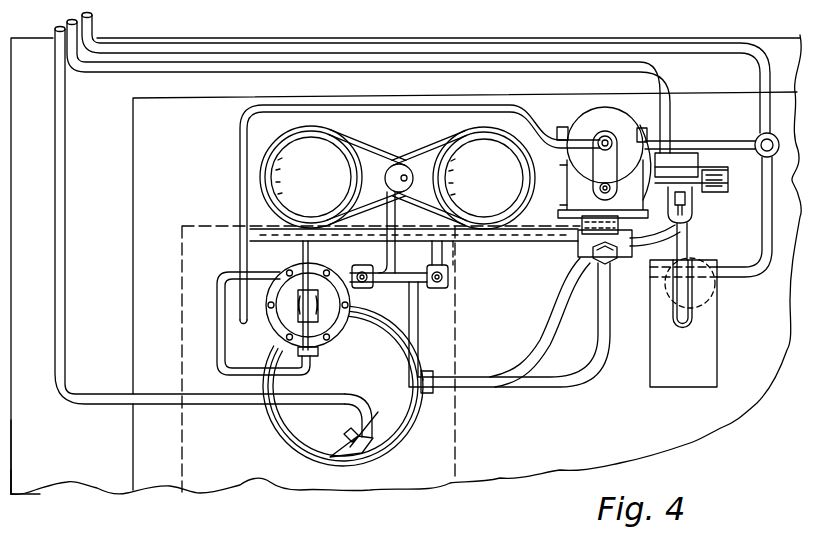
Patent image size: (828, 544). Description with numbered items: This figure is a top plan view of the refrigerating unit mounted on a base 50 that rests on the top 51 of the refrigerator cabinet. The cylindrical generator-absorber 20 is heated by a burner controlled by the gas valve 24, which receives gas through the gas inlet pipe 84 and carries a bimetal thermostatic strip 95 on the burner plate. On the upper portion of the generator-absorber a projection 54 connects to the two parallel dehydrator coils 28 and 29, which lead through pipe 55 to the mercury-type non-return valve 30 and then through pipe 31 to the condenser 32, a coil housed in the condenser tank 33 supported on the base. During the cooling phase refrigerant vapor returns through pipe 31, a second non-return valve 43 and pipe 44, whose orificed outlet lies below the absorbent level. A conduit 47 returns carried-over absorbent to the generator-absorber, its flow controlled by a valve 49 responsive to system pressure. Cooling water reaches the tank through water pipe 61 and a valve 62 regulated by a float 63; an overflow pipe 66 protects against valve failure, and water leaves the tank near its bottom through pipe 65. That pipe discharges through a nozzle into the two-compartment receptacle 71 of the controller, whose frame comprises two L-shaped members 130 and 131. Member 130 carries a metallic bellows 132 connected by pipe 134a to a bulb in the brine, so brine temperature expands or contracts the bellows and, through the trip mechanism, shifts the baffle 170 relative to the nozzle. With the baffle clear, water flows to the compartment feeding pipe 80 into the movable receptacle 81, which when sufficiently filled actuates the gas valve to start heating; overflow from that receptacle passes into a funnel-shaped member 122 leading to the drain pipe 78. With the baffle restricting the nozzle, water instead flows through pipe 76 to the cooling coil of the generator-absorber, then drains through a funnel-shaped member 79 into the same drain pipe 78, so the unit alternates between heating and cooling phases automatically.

The generator-absorber 20 is at (522, 235).
The gas valve 24 is at (686, 161).
The dehydrator coil 28 is at (482, 141).
The dehydrator coil 29 is at (302, 143).
The non-return valve 30 is at (448, 287).
The pipe 31 is at (418, 321).
The condenser 32 is at (397, 340).
The condenser tank 33 is at (422, 410).
The non-return valve 43 is at (370, 286).
The pipe 44 is at (396, 205).
The conduit 47 is at (218, 323).
The valve 49 is at (273, 333).
The base 50 is at (133, 440).
The top 51 is at (47, 478).
The projection 54 is at (399, 165).
The pipe 55 is at (453, 255).
The water pipe 61 is at (63, 105).
The valve 62 is at (338, 454).
The float 63 is at (380, 413).
The pipe 65 is at (593, 363).
The overflow pipe 66 is at (549, 319).
The receptacle 71 is at (580, 254).
The pipe 76 is at (688, 226).
The drain pipe 78 is at (512, 45).
The funnel-shaped member 79 is at (775, 136).
The pipe 80 is at (674, 250).
The movable receptacle 81 is at (650, 330).
The gas inlet pipe 84 is at (410, 66).
The bimetal thermostatic strip 95 is at (698, 177).
The funnel-shaped member 122 is at (715, 300).
The L-shaped member 130 is at (573, 179).
The L-shaped member 131 is at (562, 127).
The metallic bellows 132 is at (610, 117).
The pipe 134a is at (243, 181).
The baffle 170 is at (596, 256).